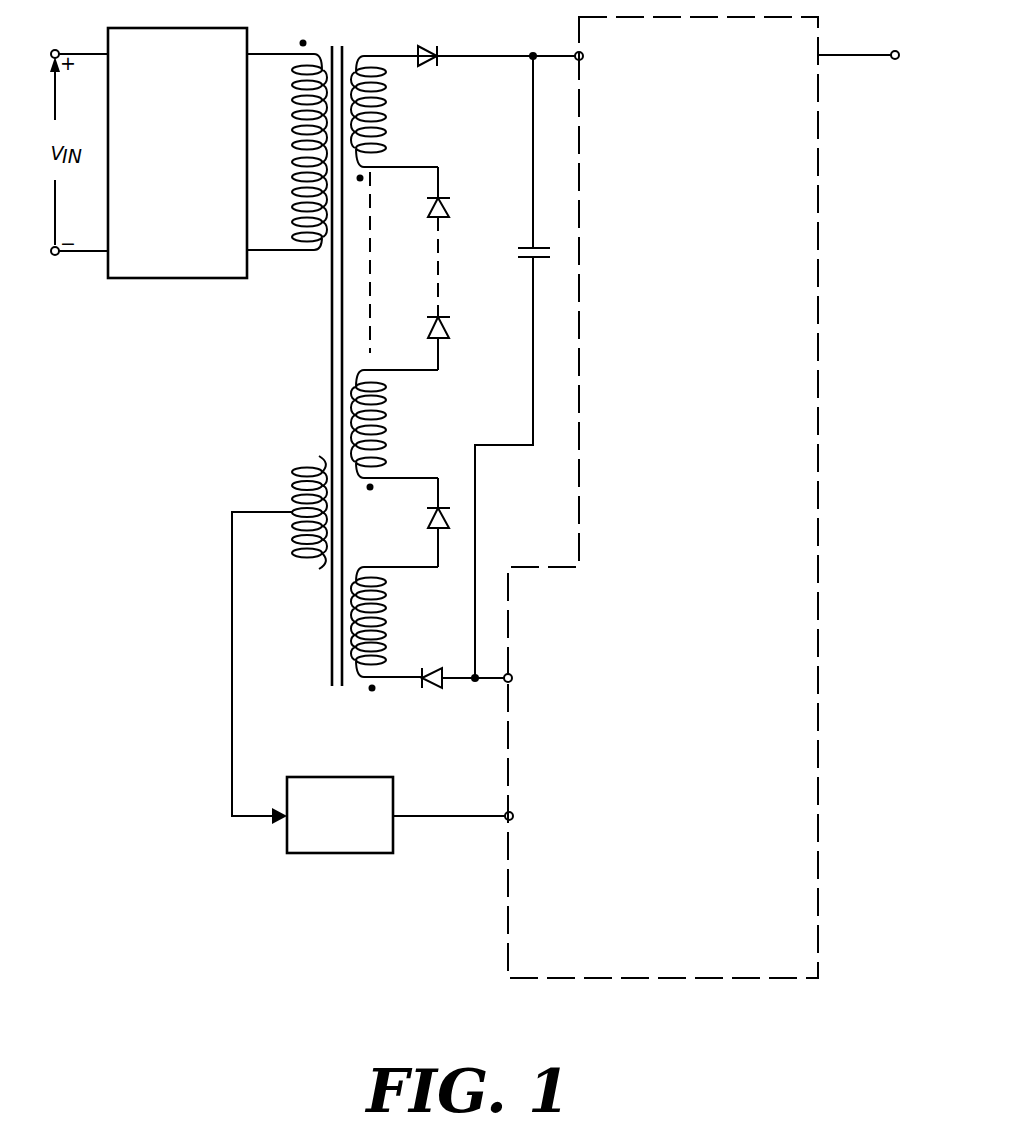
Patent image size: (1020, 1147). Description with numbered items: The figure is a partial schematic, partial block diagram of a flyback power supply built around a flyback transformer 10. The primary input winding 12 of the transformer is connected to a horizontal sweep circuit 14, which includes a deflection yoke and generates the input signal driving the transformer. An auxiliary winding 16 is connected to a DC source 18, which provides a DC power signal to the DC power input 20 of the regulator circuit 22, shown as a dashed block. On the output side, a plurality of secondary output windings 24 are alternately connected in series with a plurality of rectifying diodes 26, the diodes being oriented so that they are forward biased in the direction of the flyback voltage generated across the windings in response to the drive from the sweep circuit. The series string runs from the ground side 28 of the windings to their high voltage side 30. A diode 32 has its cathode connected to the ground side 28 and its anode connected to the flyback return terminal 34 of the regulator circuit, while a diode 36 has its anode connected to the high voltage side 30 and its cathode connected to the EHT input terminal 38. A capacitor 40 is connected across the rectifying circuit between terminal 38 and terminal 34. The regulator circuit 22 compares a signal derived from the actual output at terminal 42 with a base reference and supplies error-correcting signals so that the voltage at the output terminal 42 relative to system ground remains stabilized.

The flyback transformer 10 is at (368, 29).
The primary input winding 12 is at (292, 158).
The horizontal sweep circuit 14 is at (163, 162).
The auxiliary winding 16 is at (292, 484).
The DC source 18 is at (325, 777).
The DC power input 20 is at (513, 814).
The regulator circuit 22 is at (590, 978).
The secondary output windings 24 is at (386, 110).
The rectifying diodes 26 is at (452, 205).
The ground side of the windings 28 is at (372, 692).
The high voltage side of the windings 30 is at (372, 56).
The diode 32 is at (430, 688).
The flyback return terminal 34 is at (512, 674).
The diode 36 is at (430, 46).
The EHT input terminal 38 is at (585, 52).
The capacitor 40 is at (538, 248).
The output terminal 42 is at (895, 60).